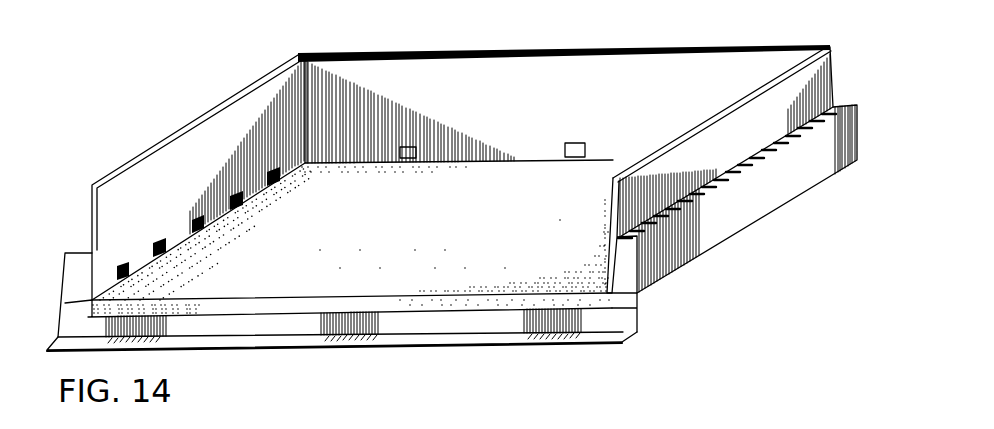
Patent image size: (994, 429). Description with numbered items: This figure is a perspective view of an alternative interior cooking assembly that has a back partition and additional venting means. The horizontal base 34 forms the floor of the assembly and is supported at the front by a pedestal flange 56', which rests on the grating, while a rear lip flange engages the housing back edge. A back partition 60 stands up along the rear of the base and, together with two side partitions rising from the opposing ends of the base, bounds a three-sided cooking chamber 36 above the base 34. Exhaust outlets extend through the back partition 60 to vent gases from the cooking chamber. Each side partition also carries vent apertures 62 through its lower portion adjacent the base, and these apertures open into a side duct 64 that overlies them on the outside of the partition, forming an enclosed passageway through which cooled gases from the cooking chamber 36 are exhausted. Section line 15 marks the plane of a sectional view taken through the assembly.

The back partition 60 is at (395, 53).
The cooking chamber 36 is at (536, 88).
The base 34 is at (430, 246).
The vent apertures 62 is at (163, 257).
The side duct 64 is at (693, 231).
The front pedestal flange 56' is at (342, 349).
The section line 15 is at (90, 232).